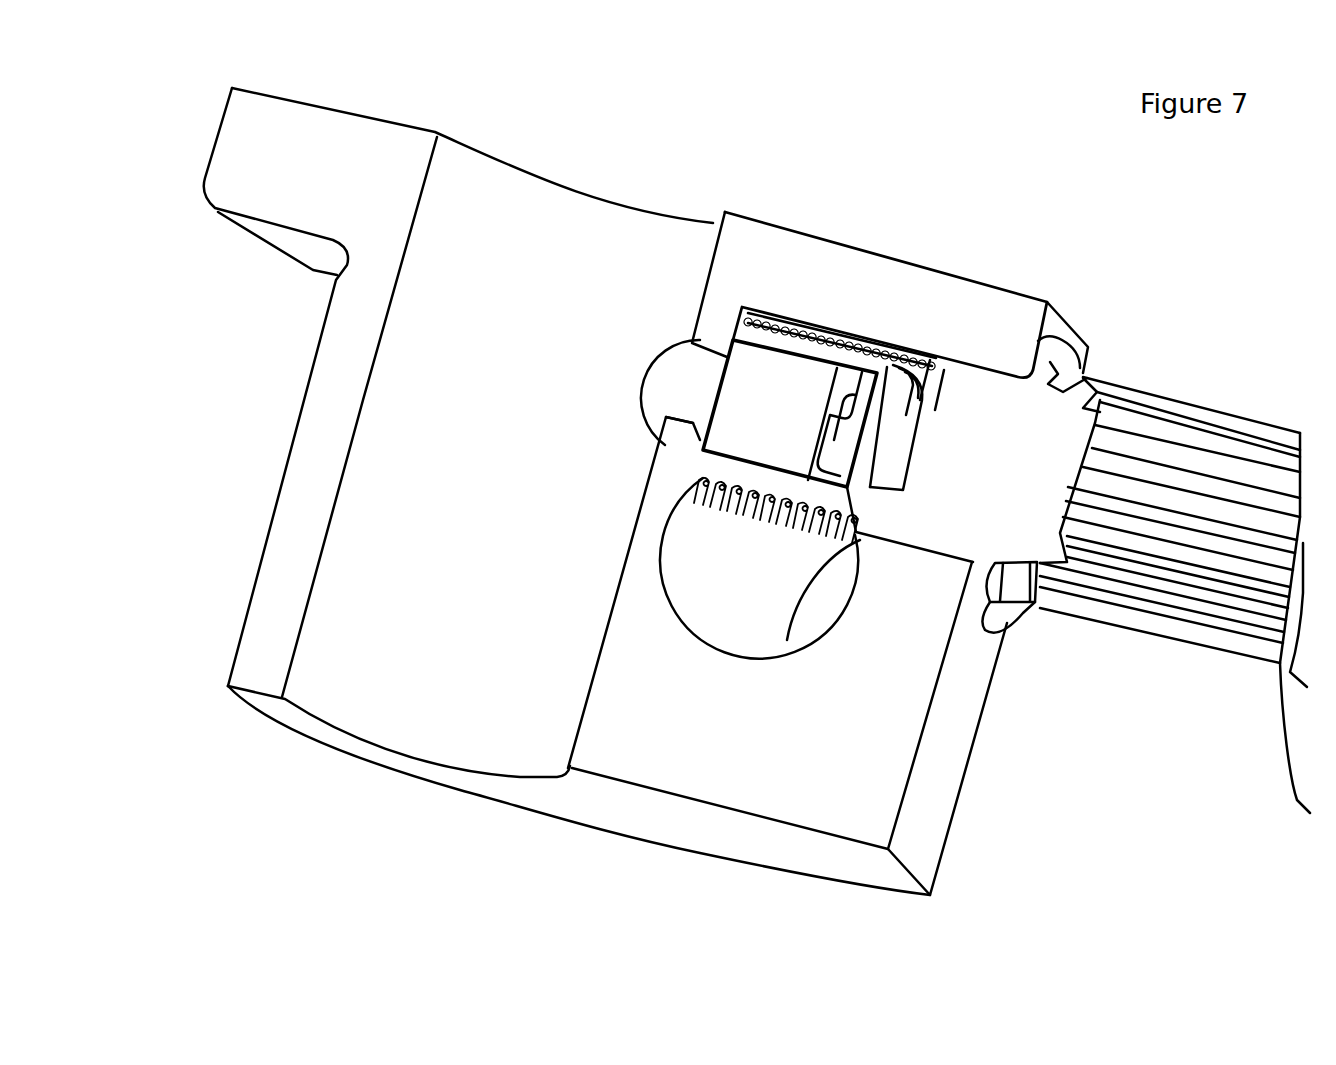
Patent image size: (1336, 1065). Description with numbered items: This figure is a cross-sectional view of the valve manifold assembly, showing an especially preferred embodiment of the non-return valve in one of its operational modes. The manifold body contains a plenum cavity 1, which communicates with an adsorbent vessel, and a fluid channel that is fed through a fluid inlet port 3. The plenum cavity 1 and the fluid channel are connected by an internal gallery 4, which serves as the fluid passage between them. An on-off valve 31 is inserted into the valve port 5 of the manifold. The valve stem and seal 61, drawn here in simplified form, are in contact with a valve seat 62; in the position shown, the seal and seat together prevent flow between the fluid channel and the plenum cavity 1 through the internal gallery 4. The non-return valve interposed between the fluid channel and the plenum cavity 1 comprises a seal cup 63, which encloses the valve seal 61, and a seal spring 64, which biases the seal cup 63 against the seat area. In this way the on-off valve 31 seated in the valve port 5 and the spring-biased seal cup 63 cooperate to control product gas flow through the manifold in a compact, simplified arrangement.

The plenum cavity 1 is at (442, 575).
The fluid inlet port 3 is at (700, 597).
The internal gallery 4 is at (675, 383).
The valve port 5 is at (928, 550).
The on-off valve 31 is at (1217, 425).
The valve stem and seal 61 is at (763, 408).
The valve seat 62 is at (697, 430).
The seal cup 63 is at (782, 317).
The seal spring 64 is at (933, 350).